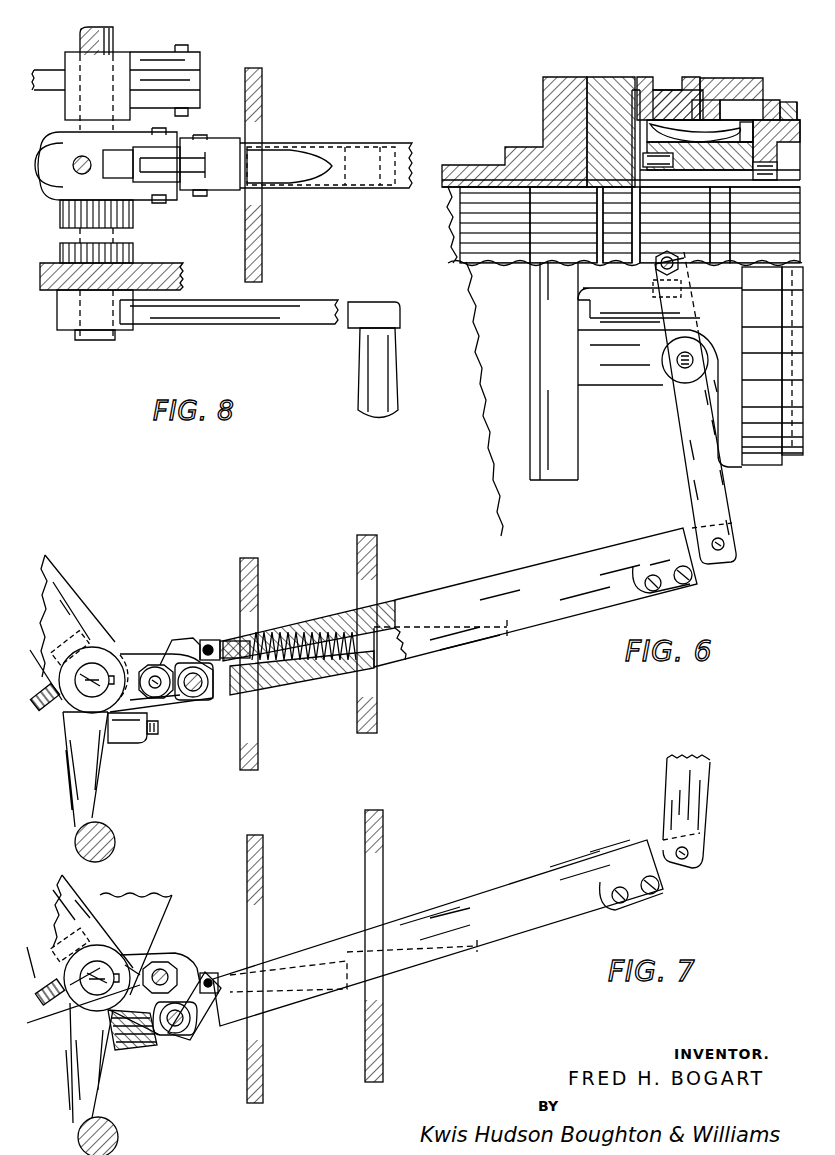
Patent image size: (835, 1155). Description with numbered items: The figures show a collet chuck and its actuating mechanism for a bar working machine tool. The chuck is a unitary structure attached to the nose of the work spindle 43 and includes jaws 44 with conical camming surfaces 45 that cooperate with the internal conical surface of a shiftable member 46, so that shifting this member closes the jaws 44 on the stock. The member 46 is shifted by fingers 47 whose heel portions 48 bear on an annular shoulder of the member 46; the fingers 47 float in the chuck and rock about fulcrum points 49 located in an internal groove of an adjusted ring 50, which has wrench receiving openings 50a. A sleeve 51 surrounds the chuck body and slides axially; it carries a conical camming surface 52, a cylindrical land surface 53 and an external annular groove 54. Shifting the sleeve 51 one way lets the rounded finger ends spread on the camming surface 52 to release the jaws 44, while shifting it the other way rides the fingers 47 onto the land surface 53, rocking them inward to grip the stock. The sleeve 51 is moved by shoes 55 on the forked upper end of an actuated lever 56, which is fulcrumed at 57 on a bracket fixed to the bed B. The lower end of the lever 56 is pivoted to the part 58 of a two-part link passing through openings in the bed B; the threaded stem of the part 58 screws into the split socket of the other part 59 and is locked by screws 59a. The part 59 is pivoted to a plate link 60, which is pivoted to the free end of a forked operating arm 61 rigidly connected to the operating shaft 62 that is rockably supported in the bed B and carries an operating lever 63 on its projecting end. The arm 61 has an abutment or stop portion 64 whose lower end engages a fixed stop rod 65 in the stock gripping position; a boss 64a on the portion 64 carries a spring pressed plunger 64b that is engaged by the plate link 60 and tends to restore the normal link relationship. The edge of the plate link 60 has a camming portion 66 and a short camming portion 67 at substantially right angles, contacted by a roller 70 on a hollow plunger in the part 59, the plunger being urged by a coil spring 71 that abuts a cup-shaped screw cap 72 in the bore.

In FIG. 6, the work spindle 43 is at (507, 147).
In FIG. 6, the jaws 44 is at (766, 326).
In FIG. 6, the conical camming surfaces 45 is at (730, 225).
In FIG. 6, the shiftable member 46 is at (675, 225).
In FIG. 6, the fingers 47 is at (700, 135).
In FIG. 6, the heel portions 48 is at (710, 161).
In FIG. 6, the fulcrum points 49 is at (741, 136).
In FIG. 6, the adjusted ring 50 is at (768, 100).
In FIG. 6, the wrench receiving openings 50a is at (795, 103).
In FIG. 6, the sleeve 51 is at (718, 84).
In FIG. 6, the conical camming surface 52 is at (640, 124).
In FIG. 6, the cylindrical land surface 53 is at (678, 105).
In FIG. 6, the annular groove 54 is at (663, 90).
In FIG. 6, the shoes 55 is at (656, 268).
In FIG. 6, the actuated lever 56 is at (690, 455).
In FIG. 7, the actuated lever 56 is at (698, 805).
In FIG. 6, the fulcrum 57 is at (674, 376).
In FIG. 6, the part of two-part link 58 is at (722, 561).
In FIG. 7, the part of two-part link 58 is at (685, 870).
In FIG. 8, the part of two-part link 59 is at (362, 143).
In FIG. 6, the part of two-part link 59 is at (575, 565).
In FIG. 7, the part of two-part link 59 is at (563, 874).
In FIG. 6, the screws 59a is at (675, 596).
In FIG. 7, the screws 59a is at (645, 900).
In FIG. 6, the plate link 60 is at (158, 699).
In FIG. 7, the plate link 60 is at (170, 970).
In FIG. 6, the forked operating arm 61 is at (127, 660).
In FIG. 7, the forked operating arm 61 is at (132, 957).
In FIG. 8, the operating shaft 62 is at (97, 27).
In FIG. 6, the operating shaft 62 is at (92, 663).
In FIG. 7, the operating shaft 62 is at (100, 961).
In FIG. 8, the operating lever 63 is at (262, 327).
In FIG. 6, the operating lever 63 is at (58, 578).
In FIG. 7, the operating lever 63 is at (85, 912).
In FIG. 6, the abutment or stop portion 64 is at (70, 785).
In FIG. 7, the abutment or stop portion 64 is at (72, 1080).
In FIG. 6, the boss 64a is at (118, 743).
In FIG. 6, the spring pressed plunger 64b is at (155, 735).
In FIG. 7, the spring pressed plunger 64b is at (152, 1045).
In FIG. 6, the fixed stop rod 65 is at (105, 834).
In FIG. 7, the fixed stop rod 65 is at (114, 1124).
In FIG. 6, the camming portion 66 is at (160, 652).
In FIG. 7, the camming portion 66 is at (220, 992).
In FIG. 6, the short camming portion 67 is at (210, 655).
In FIG. 7, the short camming portion 67 is at (185, 1035).
In FIG. 6, the roller 70 is at (212, 645).
In FIG. 7, the roller 70 is at (210, 977).
In FIG. 6, the coil spring 71 is at (290, 680).
In FIG. 6, the cup-shaped screw cap 72 is at (383, 652).
In FIG. 8, the bed B is at (262, 95).
In FIG. 6, the bed B is at (510, 385).
In FIG. 7, the bed B is at (263, 865).